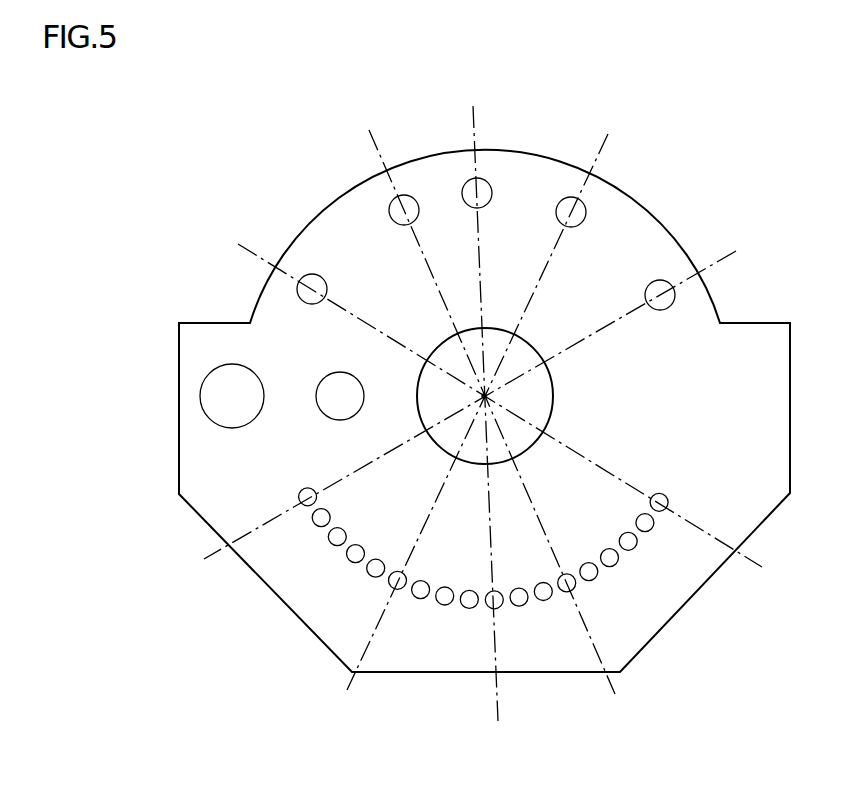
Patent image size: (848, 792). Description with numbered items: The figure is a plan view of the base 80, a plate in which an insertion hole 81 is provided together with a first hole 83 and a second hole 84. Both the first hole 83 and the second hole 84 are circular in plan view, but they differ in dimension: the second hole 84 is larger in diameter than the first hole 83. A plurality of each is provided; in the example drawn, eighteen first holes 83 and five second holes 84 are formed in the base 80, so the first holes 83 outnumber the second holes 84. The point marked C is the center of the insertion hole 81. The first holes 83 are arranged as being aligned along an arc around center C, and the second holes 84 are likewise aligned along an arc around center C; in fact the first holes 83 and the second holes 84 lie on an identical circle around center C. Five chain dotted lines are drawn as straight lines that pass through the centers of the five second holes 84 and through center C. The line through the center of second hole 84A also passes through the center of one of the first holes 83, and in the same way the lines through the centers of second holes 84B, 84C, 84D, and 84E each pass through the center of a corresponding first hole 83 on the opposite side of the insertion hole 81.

The base 80 is at (196, 176).
The insertion hole 81 is at (418, 398).
The first hole 83 is at (660, 511).
The second hole 84 is at (487, 189).
The second hole 84A is at (311, 281).
The second hole 84B is at (405, 202).
The second hole 84C is at (480, 191).
The second hole 84D is at (570, 200).
The second hole 84E is at (658, 285).
The center C is at (484, 396).